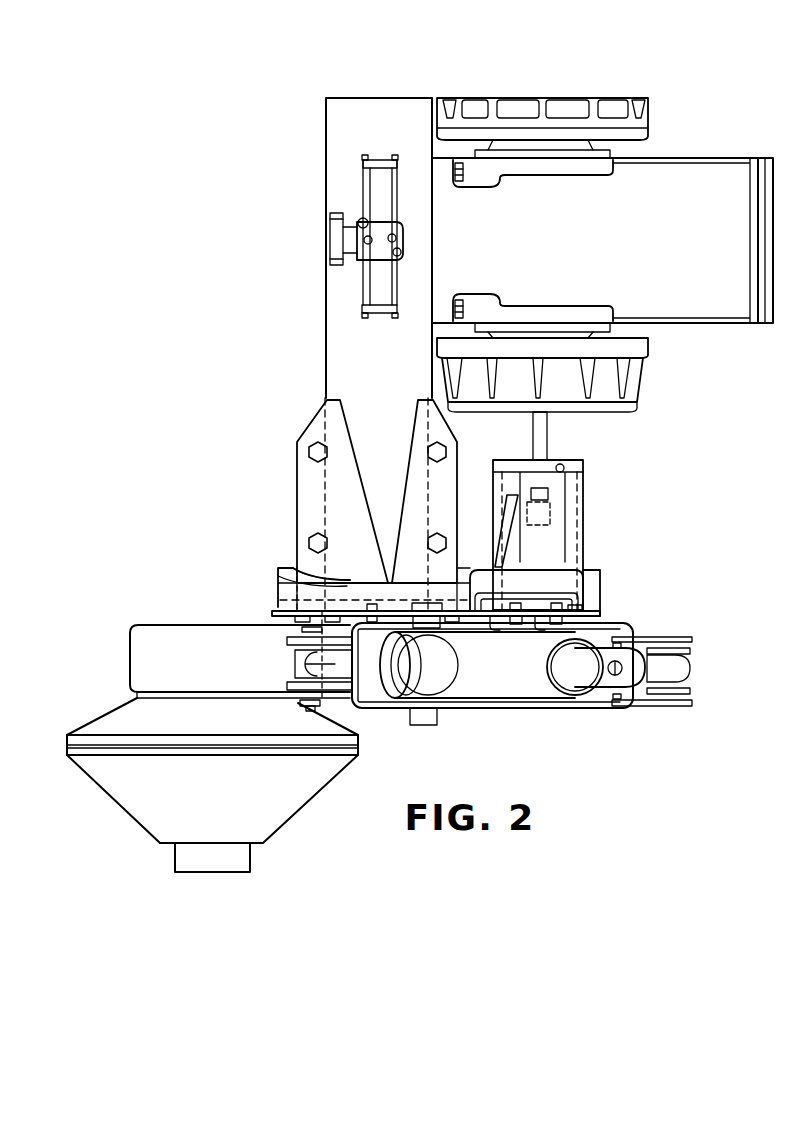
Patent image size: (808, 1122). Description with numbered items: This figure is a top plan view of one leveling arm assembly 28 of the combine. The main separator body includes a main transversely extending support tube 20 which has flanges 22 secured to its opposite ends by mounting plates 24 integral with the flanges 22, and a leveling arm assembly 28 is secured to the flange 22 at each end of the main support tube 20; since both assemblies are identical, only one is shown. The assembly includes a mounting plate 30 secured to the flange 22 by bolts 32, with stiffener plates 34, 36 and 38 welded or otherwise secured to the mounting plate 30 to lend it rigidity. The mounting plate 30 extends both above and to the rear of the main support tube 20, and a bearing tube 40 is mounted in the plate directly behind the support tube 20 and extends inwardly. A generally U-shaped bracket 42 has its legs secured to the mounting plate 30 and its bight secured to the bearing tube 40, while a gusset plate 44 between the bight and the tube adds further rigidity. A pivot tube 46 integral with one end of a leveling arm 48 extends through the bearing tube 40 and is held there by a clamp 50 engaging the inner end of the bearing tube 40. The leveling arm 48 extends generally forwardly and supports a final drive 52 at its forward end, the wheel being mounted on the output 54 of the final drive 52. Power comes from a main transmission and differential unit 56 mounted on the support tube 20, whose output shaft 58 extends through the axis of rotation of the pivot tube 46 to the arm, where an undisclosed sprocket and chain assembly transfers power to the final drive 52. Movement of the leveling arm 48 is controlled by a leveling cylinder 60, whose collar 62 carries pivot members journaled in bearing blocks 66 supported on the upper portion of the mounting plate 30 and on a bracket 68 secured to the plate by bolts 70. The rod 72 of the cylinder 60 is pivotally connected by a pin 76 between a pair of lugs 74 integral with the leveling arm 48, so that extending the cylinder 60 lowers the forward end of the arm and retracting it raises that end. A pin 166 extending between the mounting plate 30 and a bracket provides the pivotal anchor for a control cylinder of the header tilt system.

The main support tube 20 is at (333, 342).
The flange 22 is at (293, 607).
The mounting plate 24 is at (423, 478).
The leveling arm assembly 28 is at (627, 612).
The mounting plate 30 is at (272, 612).
The bolts 32 is at (331, 616).
The stiffener plate 34 is at (287, 583).
The stiffener plate 36 is at (377, 583).
The stiffener plate 38 is at (593, 578).
The bearing tube 40 is at (585, 500).
The U-shaped bracket 42 is at (556, 576).
The gusset plate 44 is at (514, 553).
The pivot tube 46 is at (577, 520).
The leveling arm 48 is at (176, 637).
The clamp 50 is at (563, 462).
The final drive 52 is at (333, 767).
The output 54 is at (243, 853).
The main transmission and differential unit 56 is at (725, 303).
The shaft 58 is at (545, 428).
The leveling cylinder 60 is at (475, 688).
The collar 62 is at (405, 688).
The bearing blocks 66 is at (430, 716).
The bracket 68 is at (390, 705).
The bolts 70 is at (373, 604).
The rod 72 is at (330, 662).
The lugs 74 is at (290, 640).
The pin 76 is at (308, 705).
The pin 166 is at (543, 642).